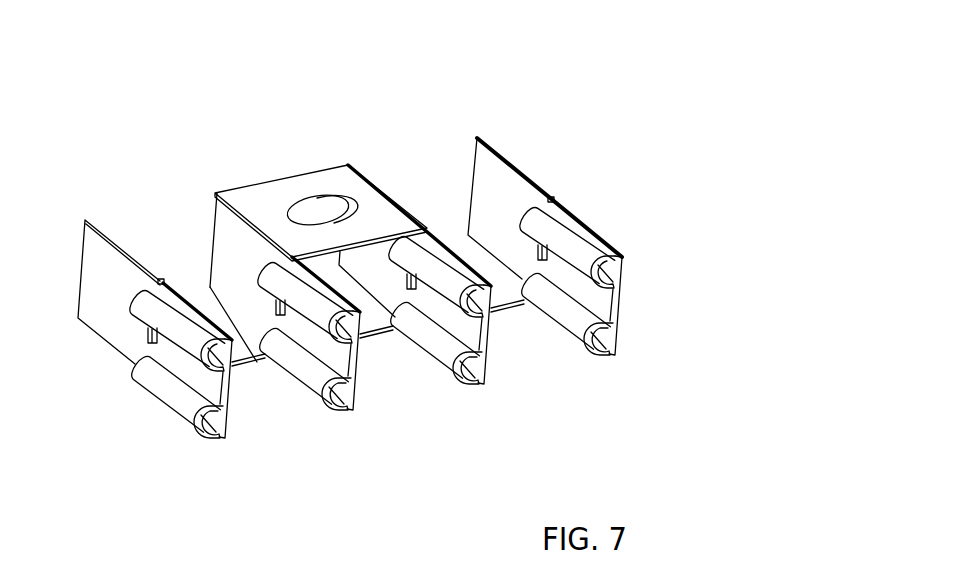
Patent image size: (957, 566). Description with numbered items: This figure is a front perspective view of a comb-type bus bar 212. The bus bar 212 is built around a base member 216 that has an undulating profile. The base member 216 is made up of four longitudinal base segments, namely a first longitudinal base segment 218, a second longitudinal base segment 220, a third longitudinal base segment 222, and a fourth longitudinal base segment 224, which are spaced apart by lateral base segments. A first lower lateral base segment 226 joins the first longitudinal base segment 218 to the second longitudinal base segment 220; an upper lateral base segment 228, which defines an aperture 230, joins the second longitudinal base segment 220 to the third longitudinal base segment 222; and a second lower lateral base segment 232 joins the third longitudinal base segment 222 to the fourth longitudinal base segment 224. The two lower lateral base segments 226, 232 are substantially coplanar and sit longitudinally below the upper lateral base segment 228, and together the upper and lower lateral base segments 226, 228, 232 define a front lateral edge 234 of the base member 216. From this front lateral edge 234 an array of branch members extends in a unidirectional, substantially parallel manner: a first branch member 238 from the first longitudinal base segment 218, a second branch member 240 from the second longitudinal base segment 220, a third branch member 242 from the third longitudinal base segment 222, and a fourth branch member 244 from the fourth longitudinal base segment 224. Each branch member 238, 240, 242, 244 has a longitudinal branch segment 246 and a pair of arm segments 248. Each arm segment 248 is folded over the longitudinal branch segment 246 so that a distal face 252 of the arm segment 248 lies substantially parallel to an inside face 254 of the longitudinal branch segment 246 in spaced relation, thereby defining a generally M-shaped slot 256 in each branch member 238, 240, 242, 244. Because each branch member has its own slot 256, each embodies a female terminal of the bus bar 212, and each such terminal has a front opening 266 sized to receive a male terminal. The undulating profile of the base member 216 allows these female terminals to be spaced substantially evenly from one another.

The bus bar 212 is at (163, 78).
The base member 216 is at (357, 145).
The first longitudinal base segment 218 is at (97, 283).
The second longitudinal base segment 220 is at (223, 235).
The third longitudinal base segment 222 is at (380, 278).
The fourth longitudinal base segment 224 is at (488, 185).
The first lower lateral base segment 226 is at (207, 307).
The upper lateral base segment 228 is at (252, 193).
The aperture 230 is at (311, 195).
The second lower lateral base segment 232 is at (466, 250).
The front lateral edge 234 is at (262, 362).
The first branch member 238 is at (230, 461).
The second branch member 240 is at (364, 434).
The third branch member 242 is at (490, 411).
The fourth branch member 244 is at (627, 383).
The longitudinal branch segment 246 is at (623, 308).
The arm segment 248 is at (575, 257).
The distal face 252 is at (623, 277).
The inside face 254 is at (578, 311).
The M-shaped slot 256 is at (214, 390).
The front opening 266 is at (457, 367).